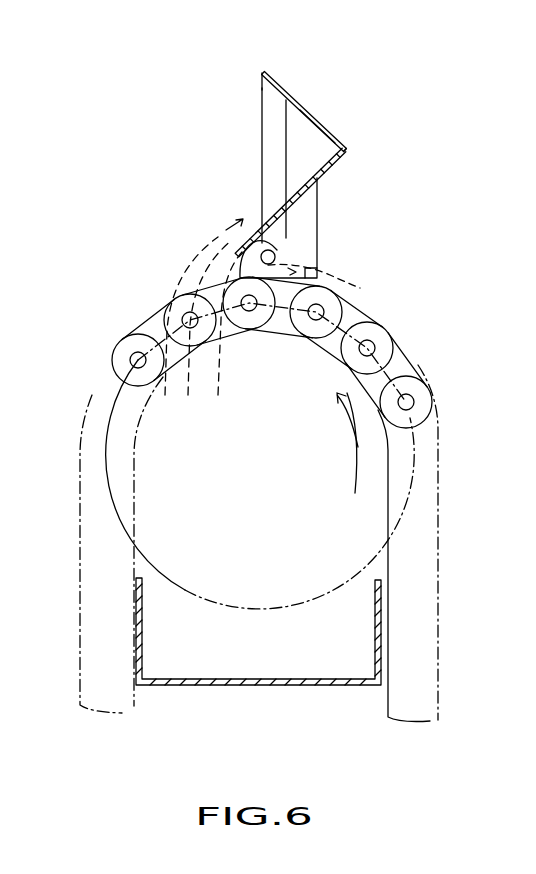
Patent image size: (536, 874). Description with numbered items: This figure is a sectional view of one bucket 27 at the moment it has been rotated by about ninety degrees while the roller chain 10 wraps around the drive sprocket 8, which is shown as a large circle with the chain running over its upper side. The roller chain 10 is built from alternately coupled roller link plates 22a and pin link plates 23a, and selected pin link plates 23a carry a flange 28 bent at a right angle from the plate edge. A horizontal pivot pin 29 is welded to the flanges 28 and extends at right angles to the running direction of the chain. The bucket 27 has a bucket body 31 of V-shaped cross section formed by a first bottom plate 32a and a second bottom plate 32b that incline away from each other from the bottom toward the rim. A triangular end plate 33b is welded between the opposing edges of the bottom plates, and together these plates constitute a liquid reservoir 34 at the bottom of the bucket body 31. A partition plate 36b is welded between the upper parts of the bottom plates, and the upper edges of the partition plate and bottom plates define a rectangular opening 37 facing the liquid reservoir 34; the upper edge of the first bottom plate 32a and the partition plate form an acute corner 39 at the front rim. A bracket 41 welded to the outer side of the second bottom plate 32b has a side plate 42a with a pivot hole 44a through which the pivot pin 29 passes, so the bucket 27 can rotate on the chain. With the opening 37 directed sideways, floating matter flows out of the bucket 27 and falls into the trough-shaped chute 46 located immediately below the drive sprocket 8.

The drive sprocket 8 is at (150, 496).
The endless roller chain 10 is at (410, 365).
The roller link plate 22a is at (332, 348).
The pin link plate 23a is at (153, 330).
The bucket 27 is at (281, 88).
The flange 28 is at (329, 284).
The pivot pin 29 is at (276, 255).
The bucket body 31 is at (346, 150).
The first bottom plate 32a is at (323, 128).
The second bottom plate 32b is at (331, 170).
The end plate 33b is at (300, 127).
The liquid reservoir 34 is at (300, 158).
The partition plate 36b is at (272, 113).
The rectangular opening 37 is at (252, 202).
The corner 39 is at (262, 74).
The bracket 41 is at (320, 198).
The side plate 42a is at (303, 222).
The pivot hole 44a is at (227, 230).
The trough-shaped chute 46 is at (263, 670).